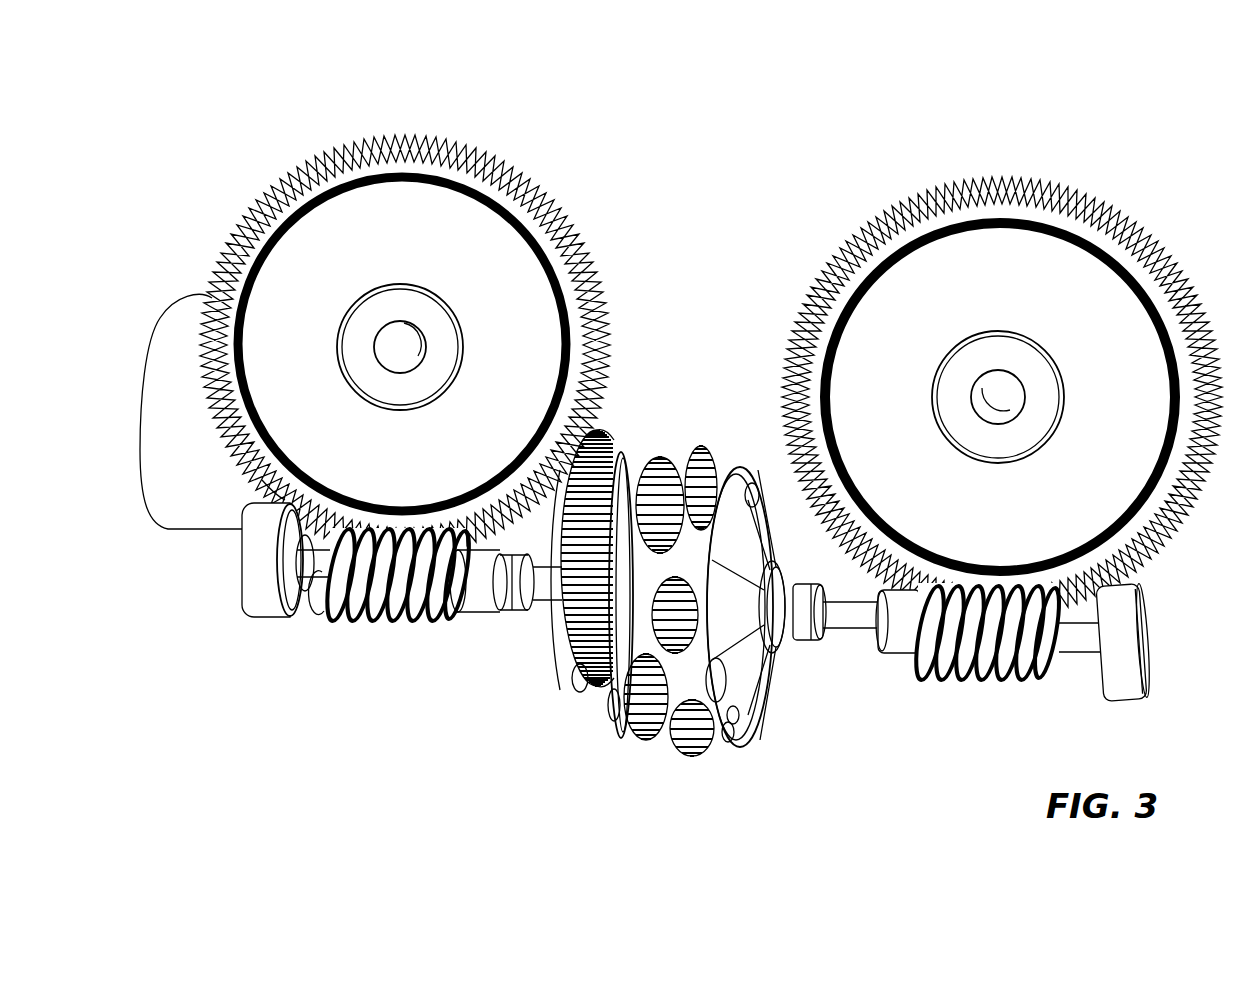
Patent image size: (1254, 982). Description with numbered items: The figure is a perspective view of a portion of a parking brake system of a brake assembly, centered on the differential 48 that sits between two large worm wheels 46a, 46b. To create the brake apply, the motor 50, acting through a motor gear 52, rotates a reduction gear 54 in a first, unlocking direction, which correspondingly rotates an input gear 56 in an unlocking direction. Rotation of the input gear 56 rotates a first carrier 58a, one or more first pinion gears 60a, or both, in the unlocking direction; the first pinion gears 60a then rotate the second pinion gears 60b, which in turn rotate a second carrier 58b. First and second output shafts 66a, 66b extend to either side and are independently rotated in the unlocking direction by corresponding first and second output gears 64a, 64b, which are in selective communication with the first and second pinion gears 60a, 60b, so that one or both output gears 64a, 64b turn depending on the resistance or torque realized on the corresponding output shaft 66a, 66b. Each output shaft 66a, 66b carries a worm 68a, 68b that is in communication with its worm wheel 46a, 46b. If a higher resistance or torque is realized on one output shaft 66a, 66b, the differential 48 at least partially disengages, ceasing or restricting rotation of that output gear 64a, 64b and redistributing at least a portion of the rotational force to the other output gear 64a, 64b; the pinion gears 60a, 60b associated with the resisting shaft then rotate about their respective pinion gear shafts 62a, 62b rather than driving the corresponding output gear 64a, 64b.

The worm wheel 46a is at (398, 166).
The worm wheel 46b is at (1032, 211).
The differential 48 is at (711, 340).
The motor 50 is at (168, 338).
The motor gear 52 is at (617, 477).
The reduction gear 54 is at (648, 456).
The input gear 56 is at (578, 678).
The first carrier 58a is at (615, 697).
The second carrier 58b is at (727, 737).
The first pinion gears 60a is at (672, 457).
The second pinion gears 60b is at (717, 447).
The pinion gear shaft 62a is at (723, 707).
The pinion gear shaft 62b is at (560, 618).
The first output gear 64a is at (570, 640).
The second output gear 64b is at (737, 680).
The first output shaft 66a is at (323, 575).
The second output shaft 66b is at (1075, 647).
The worm 68a is at (392, 613).
The worm 68b is at (987, 673).